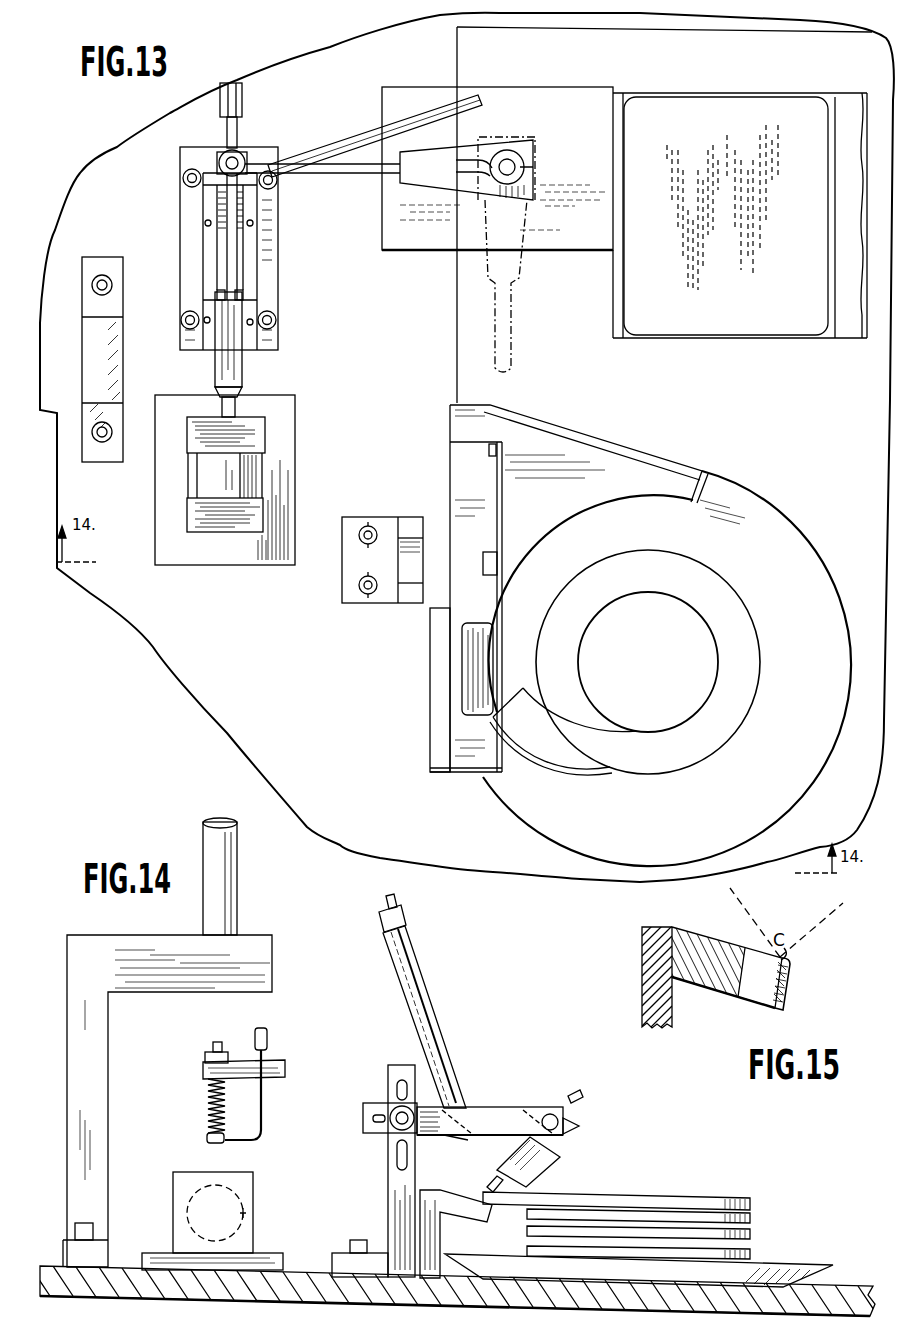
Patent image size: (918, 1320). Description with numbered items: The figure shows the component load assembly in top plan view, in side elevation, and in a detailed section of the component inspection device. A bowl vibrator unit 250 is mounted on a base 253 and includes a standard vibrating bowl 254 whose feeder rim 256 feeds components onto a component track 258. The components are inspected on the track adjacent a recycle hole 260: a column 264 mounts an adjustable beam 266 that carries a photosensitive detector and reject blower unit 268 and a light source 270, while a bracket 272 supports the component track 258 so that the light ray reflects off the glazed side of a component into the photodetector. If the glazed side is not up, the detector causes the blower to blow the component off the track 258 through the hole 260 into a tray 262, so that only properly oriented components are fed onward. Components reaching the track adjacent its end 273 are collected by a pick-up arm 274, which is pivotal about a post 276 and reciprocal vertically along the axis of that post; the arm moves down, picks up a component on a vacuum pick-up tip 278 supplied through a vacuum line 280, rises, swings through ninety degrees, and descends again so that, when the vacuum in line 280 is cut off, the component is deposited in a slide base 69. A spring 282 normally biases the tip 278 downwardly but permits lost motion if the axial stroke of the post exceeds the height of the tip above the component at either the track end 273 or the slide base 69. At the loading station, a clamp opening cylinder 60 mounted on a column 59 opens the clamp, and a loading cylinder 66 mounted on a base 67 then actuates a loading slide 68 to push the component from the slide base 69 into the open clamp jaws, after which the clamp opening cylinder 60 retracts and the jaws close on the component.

In FIG. 13, the column 59 is at (108, 390).
In FIG. 14, the column 59 is at (110, 1056).
In FIG. 14, the clamp opening cylinder 60 is at (238, 925).
In FIG. 13, the loading cylinder 66 is at (243, 487).
In FIG. 13, the base 67 is at (282, 536).
In FIG. 13, the loading slide 68 is at (240, 268).
In FIG. 13, the slide base 69 is at (240, 150).
In FIG. 13, the bowl vibrator unit 250 is at (772, 495).
In FIG. 14, the bowl vibrator unit 250 is at (590, 1194).
In FIG. 13, the base 253 is at (624, 391).
In FIG. 13, the vibrating bowl 254 is at (718, 664).
In FIG. 14, the vibrating bowl 254 is at (738, 1248).
In FIG. 13, the feeder rim 256 is at (533, 760).
In FIG. 13, the component track 258 is at (500, 682).
In FIG. 15, the component track 258 is at (790, 974).
In FIG. 13, the recycle hole 260 is at (487, 632).
In FIG. 15, the recycle hole 260 is at (752, 992).
In FIG. 14, the tray 262 is at (494, 1255).
In FIG. 13, the column 264 is at (412, 530).
In FIG. 14, the column 264 is at (390, 1188).
In FIG. 14, the adjustable beam 266 is at (520, 1106).
In FIG. 14, the photosensitive detector and reject blower unit 268 is at (568, 1128).
In FIG. 14, the light source 270 is at (447, 1062).
In FIG. 14, the bracket 272 is at (440, 1193).
In FIG. 15, the bracket 272 is at (646, 961).
In FIG. 13, the track end 273 is at (503, 448).
In FIG. 13, the pick-up arm 274 is at (262, 160).
In FIG. 14, the pick-up arm 274 is at (277, 1066).
In FIG. 13, the post 276 is at (522, 166).
In FIG. 14, the vacuum pick-up tip 278 is at (208, 1142).
In FIG. 13, the vacuum line 280 is at (366, 140).
In FIG. 14, the vacuum line 280 is at (258, 1141).
In FIG. 14, the spring 282 is at (208, 1102).